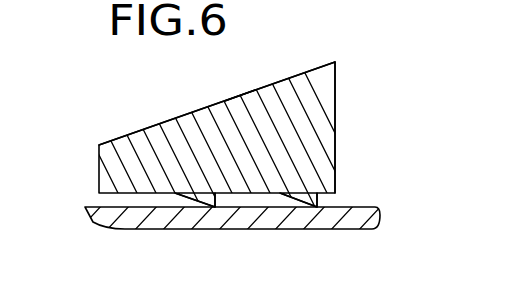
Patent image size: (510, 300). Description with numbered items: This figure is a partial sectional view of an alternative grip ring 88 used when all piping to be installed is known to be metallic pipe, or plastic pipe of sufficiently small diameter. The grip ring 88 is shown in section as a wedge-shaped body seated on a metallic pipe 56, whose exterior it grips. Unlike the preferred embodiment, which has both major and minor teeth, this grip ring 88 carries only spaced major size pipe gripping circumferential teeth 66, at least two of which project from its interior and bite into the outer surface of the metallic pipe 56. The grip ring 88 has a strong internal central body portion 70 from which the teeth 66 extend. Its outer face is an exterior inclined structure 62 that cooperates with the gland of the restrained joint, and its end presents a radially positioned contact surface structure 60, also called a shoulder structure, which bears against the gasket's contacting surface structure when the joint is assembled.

The metallic pipe 56 is at (87, 200).
The radially positioned contact surface structure 60 is at (337, 83).
The exterior inclined structure 62 is at (190, 112).
The major size pipe gripping circumferential teeth 66 is at (196, 209).
The internal central body portion 70 is at (338, 137).
The grip ring 88 is at (239, 90).